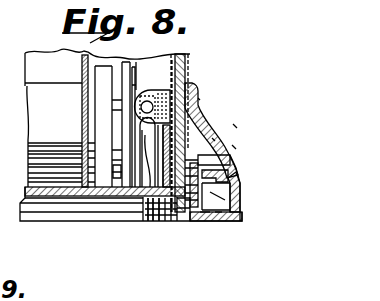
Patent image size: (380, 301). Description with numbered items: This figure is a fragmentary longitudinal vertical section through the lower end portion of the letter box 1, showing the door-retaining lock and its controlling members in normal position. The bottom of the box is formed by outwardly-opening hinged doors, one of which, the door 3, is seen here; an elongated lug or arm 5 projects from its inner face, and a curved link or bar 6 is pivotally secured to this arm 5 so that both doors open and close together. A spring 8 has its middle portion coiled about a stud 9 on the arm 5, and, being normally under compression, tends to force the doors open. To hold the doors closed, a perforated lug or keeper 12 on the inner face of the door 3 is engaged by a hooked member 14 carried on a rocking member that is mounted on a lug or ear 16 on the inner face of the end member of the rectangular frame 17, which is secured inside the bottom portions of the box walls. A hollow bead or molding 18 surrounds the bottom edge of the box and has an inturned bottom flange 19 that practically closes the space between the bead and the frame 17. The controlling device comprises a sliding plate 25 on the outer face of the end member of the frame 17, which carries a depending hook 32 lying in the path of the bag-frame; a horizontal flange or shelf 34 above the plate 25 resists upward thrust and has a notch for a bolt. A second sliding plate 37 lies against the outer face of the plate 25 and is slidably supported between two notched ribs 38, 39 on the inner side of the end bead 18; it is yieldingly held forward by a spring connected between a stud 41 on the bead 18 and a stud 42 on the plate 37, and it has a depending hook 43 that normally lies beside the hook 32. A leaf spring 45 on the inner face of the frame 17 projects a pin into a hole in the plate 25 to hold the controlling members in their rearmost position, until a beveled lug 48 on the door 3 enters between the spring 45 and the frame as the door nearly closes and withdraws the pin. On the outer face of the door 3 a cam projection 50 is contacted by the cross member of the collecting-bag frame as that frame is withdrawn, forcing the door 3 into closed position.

The letter box 1 is at (63, 68).
The hinged door 3 is at (60, 196).
The elongated lug or arm 5 is at (100, 130).
The curved link or bar 6 is at (132, 90).
The spring 8 is at (122, 128).
The stud 9 is at (143, 93).
The lug or keeper 12 is at (147, 170).
The hooked member 14 is at (197, 118).
The lug or ear 16 is at (187, 86).
The rectangular frame 17 is at (198, 98).
The hollow bead or molding 18 is at (234, 146).
The inturned bottom flange 19 is at (219, 222).
The sliding plate 25 is at (212, 138).
The depending hook 32 is at (181, 223).
The horizontal flange or shelf 34 is at (235, 125).
The sliding plate 37 is at (220, 198).
The notched rib 38 is at (218, 188).
The notched rib 39 is at (214, 162).
The stud 41 is at (236, 178).
The stud 42 is at (240, 199).
The depending hook 43 is at (206, 223).
The leaf spring 45 is at (148, 223).
The lug 48 is at (158, 223).
The cam projection 50 is at (152, 223).